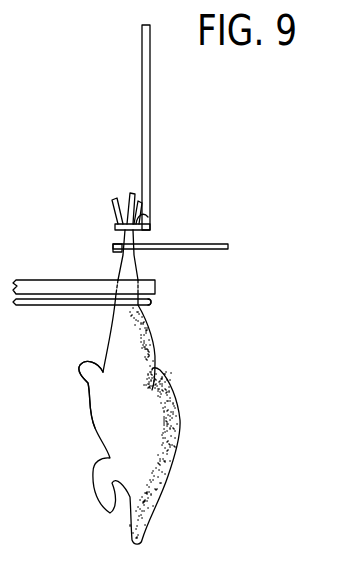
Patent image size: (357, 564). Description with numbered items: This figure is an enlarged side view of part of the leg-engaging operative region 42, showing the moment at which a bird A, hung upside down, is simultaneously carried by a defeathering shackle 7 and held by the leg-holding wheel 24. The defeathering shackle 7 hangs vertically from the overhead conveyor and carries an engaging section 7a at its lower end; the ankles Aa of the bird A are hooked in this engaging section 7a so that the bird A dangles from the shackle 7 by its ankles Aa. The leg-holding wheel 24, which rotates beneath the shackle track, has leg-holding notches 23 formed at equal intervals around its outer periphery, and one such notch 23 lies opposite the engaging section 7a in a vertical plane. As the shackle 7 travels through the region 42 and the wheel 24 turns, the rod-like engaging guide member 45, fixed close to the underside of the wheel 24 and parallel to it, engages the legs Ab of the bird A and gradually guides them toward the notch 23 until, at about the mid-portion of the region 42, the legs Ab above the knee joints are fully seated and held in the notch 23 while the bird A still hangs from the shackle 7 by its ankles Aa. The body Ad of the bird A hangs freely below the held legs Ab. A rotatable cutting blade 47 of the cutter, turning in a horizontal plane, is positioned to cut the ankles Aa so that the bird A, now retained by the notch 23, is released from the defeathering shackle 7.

The defeathering shackle 7 is at (150, 111).
The engaging section 7a is at (147, 231).
The cutting blade 47 is at (222, 244).
The leg-engaging operative region 42 is at (190, 278).
The leg-holding wheel 24 is at (40, 281).
The leg-holding notch 23 is at (140, 283).
The engaging guide member 45 is at (49, 305).
The ankles Aa is at (122, 233).
The legs Ab is at (152, 302).
The bird A is at (186, 424).
The body Ad is at (96, 426).